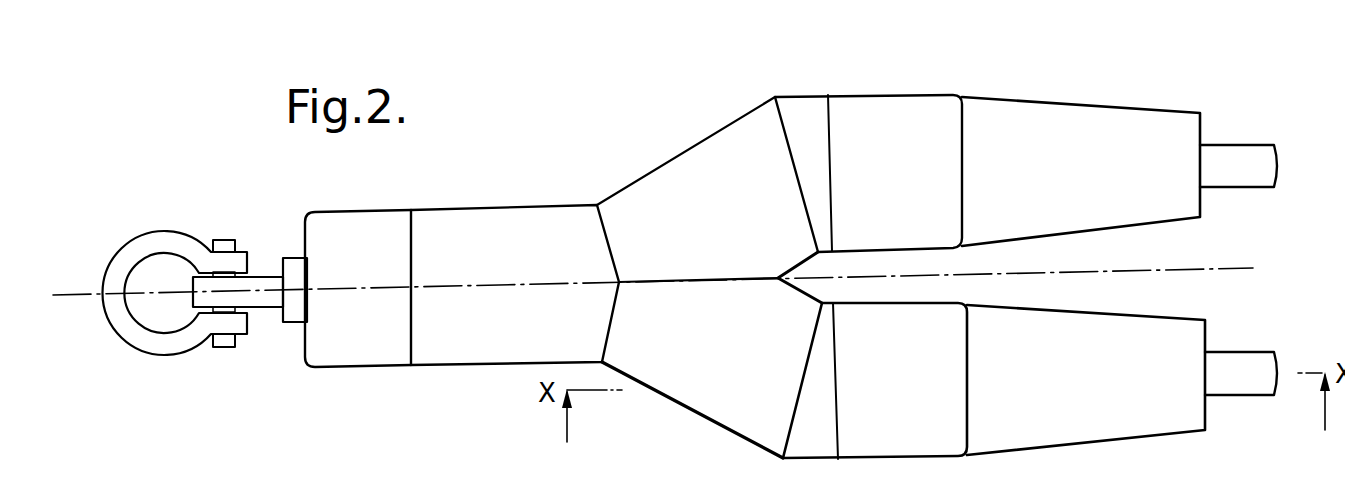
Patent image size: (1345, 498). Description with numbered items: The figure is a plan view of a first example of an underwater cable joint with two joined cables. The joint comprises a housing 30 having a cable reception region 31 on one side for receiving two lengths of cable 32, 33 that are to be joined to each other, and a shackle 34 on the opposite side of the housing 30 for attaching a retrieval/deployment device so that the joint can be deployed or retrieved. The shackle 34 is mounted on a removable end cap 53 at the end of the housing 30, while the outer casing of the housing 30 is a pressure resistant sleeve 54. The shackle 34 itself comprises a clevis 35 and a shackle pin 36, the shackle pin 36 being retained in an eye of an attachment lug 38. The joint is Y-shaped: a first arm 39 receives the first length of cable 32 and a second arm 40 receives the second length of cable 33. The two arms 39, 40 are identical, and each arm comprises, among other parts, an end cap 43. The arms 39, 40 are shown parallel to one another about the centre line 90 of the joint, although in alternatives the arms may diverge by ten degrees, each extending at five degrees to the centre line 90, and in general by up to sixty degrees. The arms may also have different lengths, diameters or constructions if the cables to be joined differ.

The housing 30 is at (563, 277).
The cable reception region 31 is at (1026, 140).
The first length of cable 32 is at (1243, 145).
The second length of cable 33 is at (1243, 352).
The shackle 34 is at (187, 288).
The clevis 35 is at (118, 332).
The shackle pin 36 is at (220, 347).
The attachment lug 38 is at (260, 272).
The first arm 39 is at (1067, 102).
The second arm 40 is at (1168, 435).
The end cap 43 is at (932, 92).
The removable end cap 53 is at (352, 370).
The pressure resistant sleeve 54 is at (473, 207).
The centre line 90 is at (1180, 270).